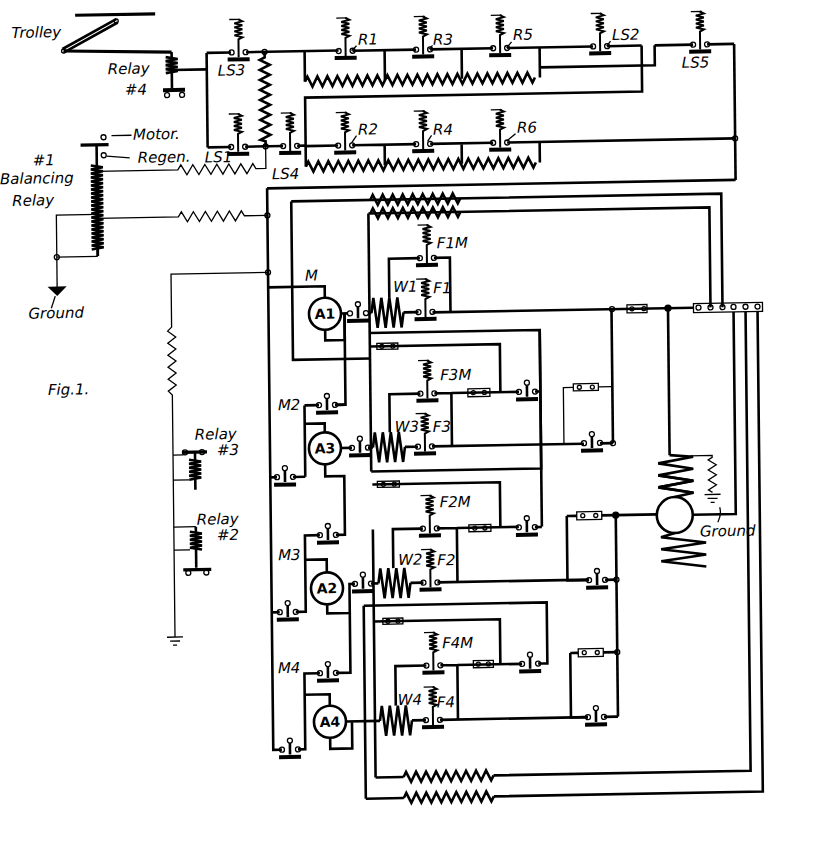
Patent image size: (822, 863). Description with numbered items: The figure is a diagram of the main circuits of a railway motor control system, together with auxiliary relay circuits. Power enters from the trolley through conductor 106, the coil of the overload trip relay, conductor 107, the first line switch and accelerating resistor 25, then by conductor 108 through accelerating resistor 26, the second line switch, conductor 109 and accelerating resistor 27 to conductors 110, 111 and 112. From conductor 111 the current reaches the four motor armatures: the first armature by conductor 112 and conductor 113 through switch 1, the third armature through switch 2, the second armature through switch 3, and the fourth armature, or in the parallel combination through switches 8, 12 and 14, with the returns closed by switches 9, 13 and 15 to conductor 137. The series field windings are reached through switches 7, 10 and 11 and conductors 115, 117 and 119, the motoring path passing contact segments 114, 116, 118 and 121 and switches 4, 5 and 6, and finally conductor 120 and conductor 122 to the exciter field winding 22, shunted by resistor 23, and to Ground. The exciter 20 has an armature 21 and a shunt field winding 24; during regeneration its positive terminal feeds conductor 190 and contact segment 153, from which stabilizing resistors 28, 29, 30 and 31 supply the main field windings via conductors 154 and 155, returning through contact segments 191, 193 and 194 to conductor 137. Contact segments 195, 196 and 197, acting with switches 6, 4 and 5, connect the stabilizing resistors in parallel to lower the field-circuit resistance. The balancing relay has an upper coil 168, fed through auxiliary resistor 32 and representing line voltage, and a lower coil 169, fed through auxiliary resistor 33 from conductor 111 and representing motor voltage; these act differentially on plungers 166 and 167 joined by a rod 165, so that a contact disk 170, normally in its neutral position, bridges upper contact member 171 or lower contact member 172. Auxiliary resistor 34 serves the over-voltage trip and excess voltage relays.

The cam-operated switch 1 is at (329, 396).
The cam-operated switch 2 is at (330, 529).
The cam-operated switch 3 is at (331, 664).
The cam-operated switch 4 is at (530, 652).
The cam-operated switch 5 is at (528, 513).
The cam-operated switch 6 is at (528, 377).
The cam-operated switch 7 is at (360, 437).
The cam-operated switch 8 is at (287, 599).
The cam-operated switch 9 is at (602, 570).
The cam-operated switch 10 is at (358, 300).
The cam-operated switch 11 is at (365, 571).
The cam-operated switch 12 is at (287, 464).
The cam-operated switch 13 is at (598, 434).
The cam-operated switch 14 is at (292, 737).
The cam-operated switch 15 is at (602, 707).
The exciter 20 is at (636, 506).
The exciter armature 21 is at (657, 528).
The field winding 22 is at (658, 464).
The resistor 23 is at (708, 468).
The shunt field winding 24 is at (662, 552).
The accelerating resistor 25 is at (266, 94).
The accelerating resistor 26 is at (422, 67).
The accelerating resistor 27 is at (421, 157).
The stabilizing resistor 28 is at (463, 197).
The stabilizing resistor 29 is at (463, 215).
The stabilizing resistor 30 is at (489, 775).
The stabilizing resistor 31 is at (492, 800).
The auxiliary resistor 32 is at (182, 174).
The auxiliary resistor 33 is at (183, 230).
The auxiliary resistor 34 is at (169, 343).
The conductor 106 is at (89, 52).
The conductor 107 is at (211, 107).
The conductor 108 is at (490, 40).
The conductor 109 is at (625, 98).
The conductor 110 is at (650, 141).
The conductor 111 is at (270, 193).
The conductor 112 is at (269, 288).
The conductor 113 is at (355, 359).
The contact segment 114-Mot. 114 is at (491, 674).
The conductor 115 is at (456, 626).
The contact segment 116-Mot. 116 is at (476, 520).
The conductor 117 is at (508, 457).
The contact segment 118-Mot. 118 is at (486, 402).
The conductor 119 is at (456, 393).
The conductor 120 is at (562, 299).
The contact segment 121-Mot. 121 is at (622, 302).
The conductor 122 is at (653, 380).
The conductor 137 is at (658, 480).
The contact segment 153-Reg. 153 is at (742, 300).
The conductor 154 is at (326, 354).
The conductor 155 is at (363, 769).
The rod or stem 165 is at (104, 210).
The plunger 166 is at (104, 184).
The plunger 167 is at (101, 248).
The actuating coil 168 is at (99, 163).
The actuating coil 169 is at (76, 236).
The contact disk 170 is at (94, 130).
The upper contact member 171 is at (109, 130).
The lower contact member 172 is at (118, 161).
The conductor 190 is at (734, 403).
The contact segment 191-Reg. 191 is at (580, 404).
The contact segment 193-Reg. 193 is at (584, 675).
The contact segment 194-Reg. 194 is at (584, 539).
The contact segment 195-Reg. 195 is at (435, 367).
The contact segment 196-Reg. 196 is at (437, 641).
The contact segment 197-Reg. 197 is at (436, 504).